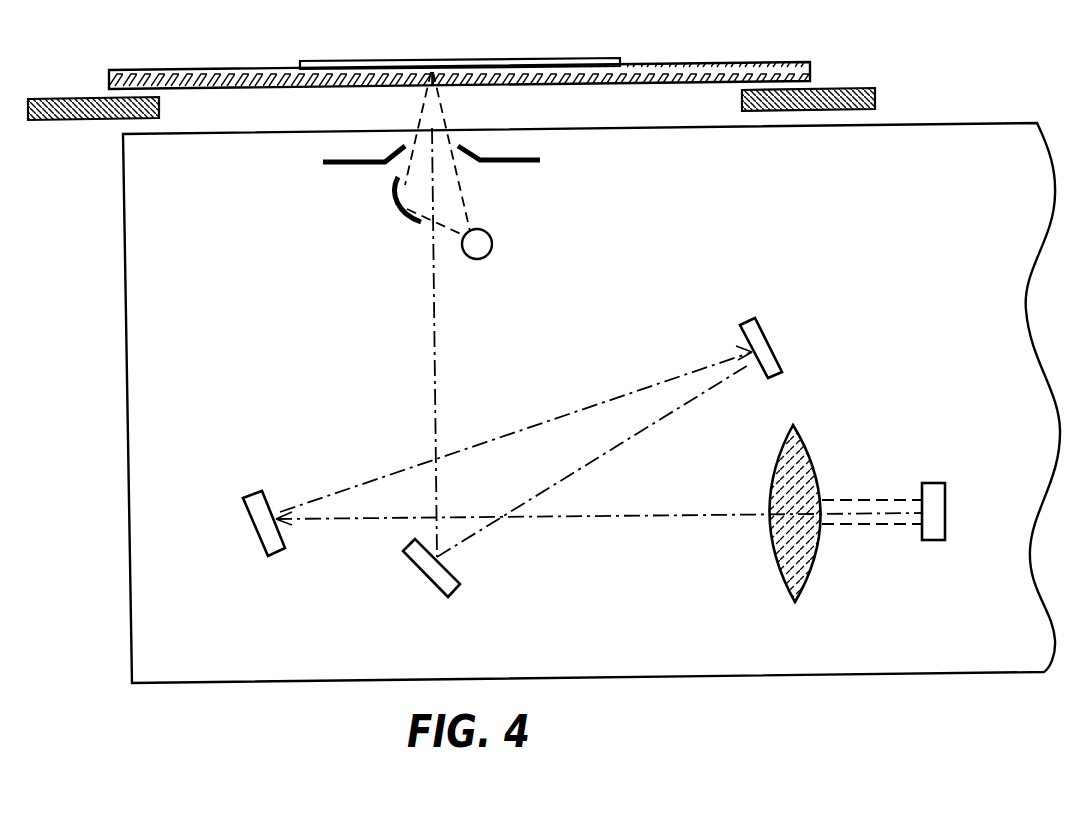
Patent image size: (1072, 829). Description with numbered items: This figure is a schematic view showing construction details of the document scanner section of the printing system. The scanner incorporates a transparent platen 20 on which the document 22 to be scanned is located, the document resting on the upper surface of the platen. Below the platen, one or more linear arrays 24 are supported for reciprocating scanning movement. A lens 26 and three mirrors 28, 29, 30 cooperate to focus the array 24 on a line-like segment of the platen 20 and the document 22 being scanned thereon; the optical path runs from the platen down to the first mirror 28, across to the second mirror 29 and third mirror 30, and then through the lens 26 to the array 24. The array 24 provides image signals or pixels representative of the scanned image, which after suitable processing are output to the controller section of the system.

The transparent platen 20 is at (221, 90).
The document 22 is at (513, 60).
The linear array 24 is at (931, 483).
The lens 26 is at (812, 576).
The mirror 28 is at (432, 585).
The mirror 29 is at (771, 343).
The mirror 30 is at (258, 532).